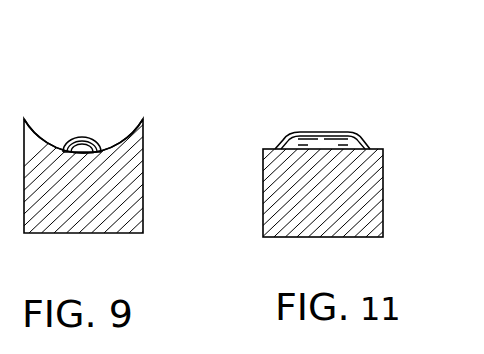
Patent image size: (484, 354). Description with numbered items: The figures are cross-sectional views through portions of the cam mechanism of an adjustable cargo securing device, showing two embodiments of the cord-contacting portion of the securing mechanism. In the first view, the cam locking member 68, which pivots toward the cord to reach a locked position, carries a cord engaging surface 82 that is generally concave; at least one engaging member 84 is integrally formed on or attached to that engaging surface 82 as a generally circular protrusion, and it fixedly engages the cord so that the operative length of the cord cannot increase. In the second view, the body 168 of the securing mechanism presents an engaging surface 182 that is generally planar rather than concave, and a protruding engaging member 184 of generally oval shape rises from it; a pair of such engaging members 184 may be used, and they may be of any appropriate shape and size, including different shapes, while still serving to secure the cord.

In FIG. 9, the cam locking member 68 is at (120, 165).
In FIG. 9, the cord engaging surface 82 is at (50, 141).
In FIG. 9, the engaging member 84 is at (86, 136).
In FIG. 11, the substrate body 168 is at (303, 205).
In FIG. 11, the engaging surface 182 is at (268, 148).
In FIG. 11, the engaging member 184 is at (352, 135).